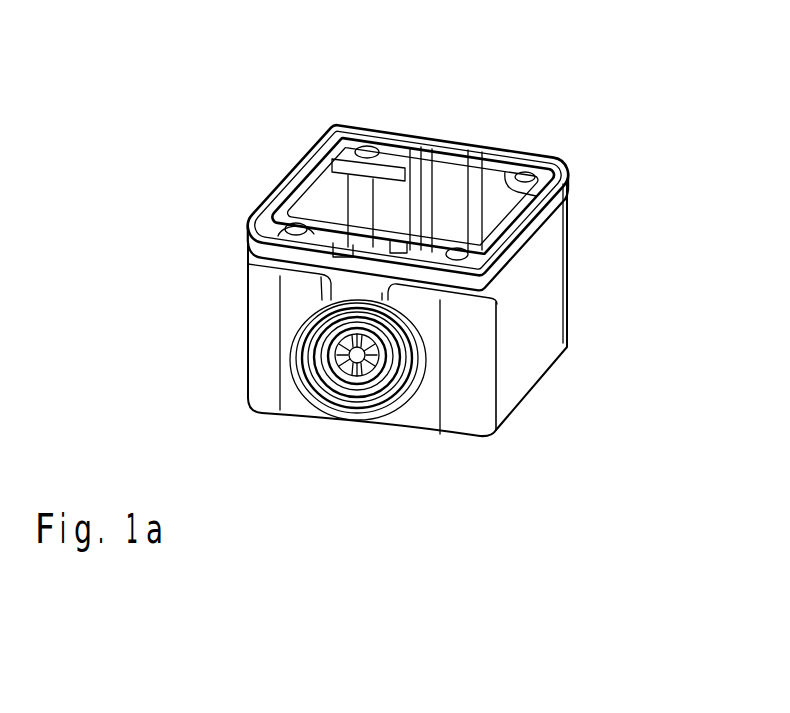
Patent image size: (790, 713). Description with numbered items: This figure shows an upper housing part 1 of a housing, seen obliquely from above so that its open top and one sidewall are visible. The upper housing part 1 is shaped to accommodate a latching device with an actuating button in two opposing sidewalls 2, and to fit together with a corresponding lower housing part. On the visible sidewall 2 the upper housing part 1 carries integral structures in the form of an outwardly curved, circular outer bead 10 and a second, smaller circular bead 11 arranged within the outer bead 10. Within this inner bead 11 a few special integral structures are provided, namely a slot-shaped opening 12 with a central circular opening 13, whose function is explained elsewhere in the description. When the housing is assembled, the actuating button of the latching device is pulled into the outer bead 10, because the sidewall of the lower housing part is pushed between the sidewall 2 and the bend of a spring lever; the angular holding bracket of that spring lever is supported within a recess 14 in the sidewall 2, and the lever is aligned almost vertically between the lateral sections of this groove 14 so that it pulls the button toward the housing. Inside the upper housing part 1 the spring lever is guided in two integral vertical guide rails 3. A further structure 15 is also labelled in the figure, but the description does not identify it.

The upper housing part 1 is at (505, 135).
The sidewall 2 is at (523, 147).
The vertical guide rails 3 is at (250, 241).
The outer bead 10 is at (295, 368).
The inner bead 11 is at (345, 378).
The slot-shaped opening 12 is at (400, 372).
The central circular opening 13 is at (360, 368).
The recess 14 is at (467, 147).
The web 15 is at (440, 138).